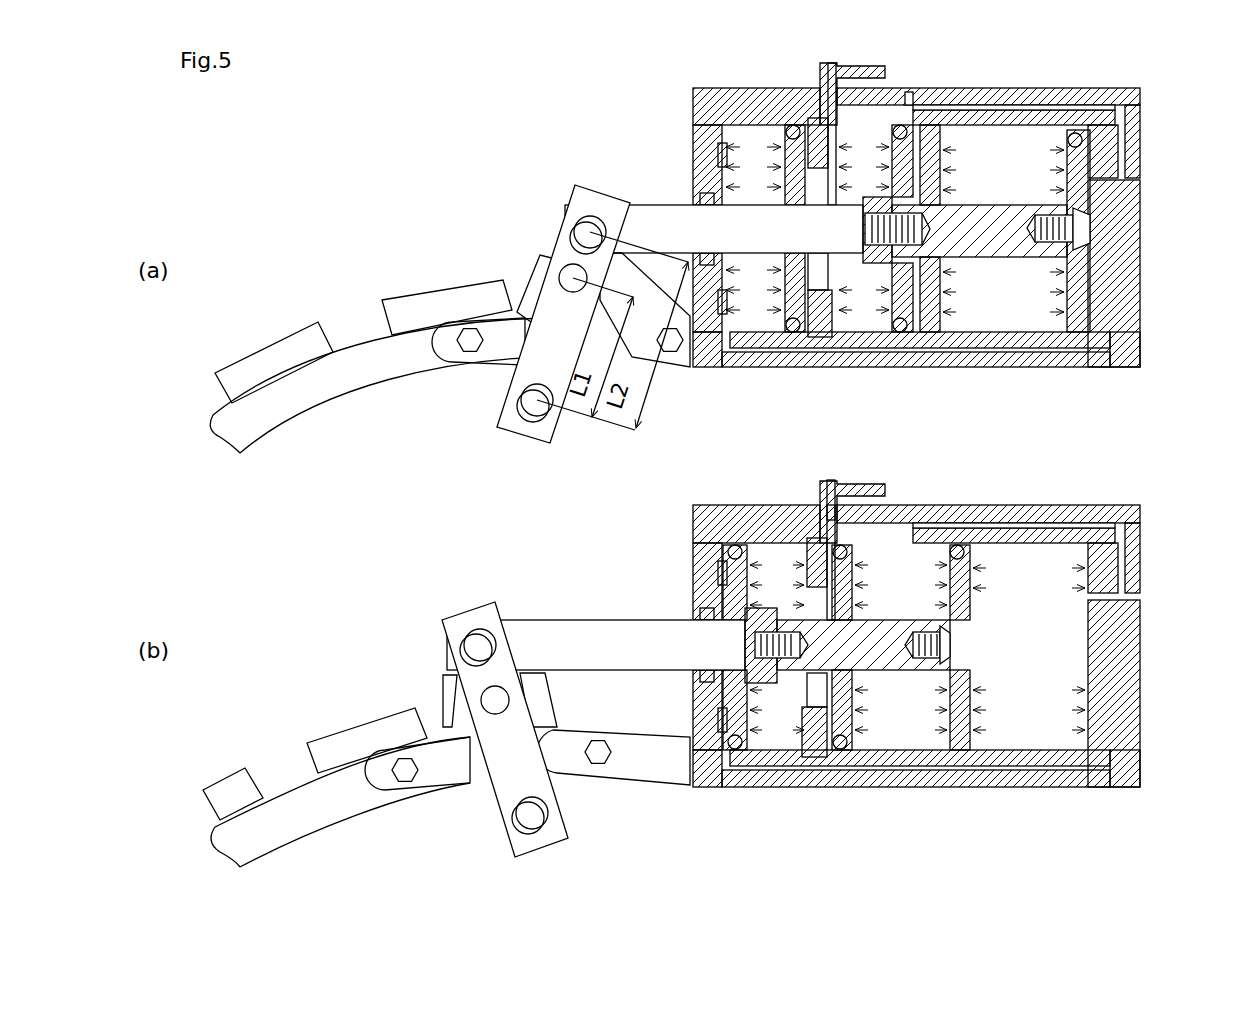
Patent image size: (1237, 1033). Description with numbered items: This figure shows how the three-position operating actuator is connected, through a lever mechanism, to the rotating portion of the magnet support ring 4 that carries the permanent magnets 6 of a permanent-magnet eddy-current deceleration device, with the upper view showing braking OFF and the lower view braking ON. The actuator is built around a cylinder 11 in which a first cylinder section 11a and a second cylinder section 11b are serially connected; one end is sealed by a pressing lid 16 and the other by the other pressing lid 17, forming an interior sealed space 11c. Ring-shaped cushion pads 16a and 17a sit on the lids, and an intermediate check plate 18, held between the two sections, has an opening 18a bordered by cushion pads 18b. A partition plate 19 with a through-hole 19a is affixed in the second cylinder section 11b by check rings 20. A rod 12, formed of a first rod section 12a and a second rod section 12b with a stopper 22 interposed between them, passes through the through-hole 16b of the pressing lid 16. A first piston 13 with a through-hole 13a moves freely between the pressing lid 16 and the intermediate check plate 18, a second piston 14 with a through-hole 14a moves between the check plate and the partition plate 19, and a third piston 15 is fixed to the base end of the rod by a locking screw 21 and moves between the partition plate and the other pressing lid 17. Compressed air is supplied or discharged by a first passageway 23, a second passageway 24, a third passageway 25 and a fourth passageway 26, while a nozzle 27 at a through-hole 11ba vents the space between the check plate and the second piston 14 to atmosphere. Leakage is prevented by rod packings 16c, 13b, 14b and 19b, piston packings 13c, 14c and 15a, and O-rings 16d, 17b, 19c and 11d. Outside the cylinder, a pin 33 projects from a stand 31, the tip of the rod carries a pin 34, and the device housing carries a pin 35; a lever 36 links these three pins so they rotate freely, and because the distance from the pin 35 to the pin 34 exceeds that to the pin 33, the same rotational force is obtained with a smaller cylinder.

The magnet support ring 4 is at (278, 418).
The permanent magnets 6 is at (270, 355).
The cylinder 11 is at (990, 410).
The first cylinder section 11a is at (848, 368).
The second cylinder section 11b is at (948, 353).
The through-hole 11ba is at (860, 117).
The sealed space 11c is at (1003, 335).
The O-ring 11d is at (898, 350).
The rod 12 is at (648, 203).
The first rod section 12a is at (692, 225).
The second rod section 12b is at (1022, 247).
The first piston 13 is at (758, 340).
The through-hole 13a is at (818, 262).
The rod packing 13b is at (797, 225).
The piston packing 13c is at (793, 124).
The second piston 14 is at (895, 180).
The through-hole 14a is at (916, 212).
The rod packing 14b is at (892, 295).
The piston packing 14c is at (893, 135).
The third piston 15 is at (1068, 305).
The piston packing 15a is at (1078, 135).
The pressing lid 16 is at (698, 168).
The cushion pad 16a is at (735, 150).
The through-hole 16b is at (726, 237).
The rod packing 16c is at (724, 280).
The O-ring 16d is at (712, 350).
The other pressing lid 17 is at (1132, 290).
The cushion pad 17a is at (1095, 150).
The O-ring 17b is at (1120, 140).
The intermediate check plate 18 is at (818, 117).
The opening 18a is at (806, 150).
The cushion pad 18b is at (838, 148).
The partition plate 19 is at (945, 185).
The through-hole 19a is at (968, 233).
The rod packing 19b is at (944, 262).
The O-ring 19c is at (945, 162).
The check rings 20 is at (965, 88).
The locking screw 21 is at (1075, 232).
The stopper 22 is at (885, 265).
The first passageway 23 is at (1140, 180).
The second passageway 24 is at (1118, 352).
The third passageway 25 is at (1070, 110).
The fourth passageway 26 is at (800, 352).
The nozzle 27 is at (830, 64).
The stand 31 is at (627, 347).
The pin 33 is at (570, 278).
The pin 34 is at (585, 230).
The pin 35 is at (533, 402).
The lever 36 is at (547, 325).